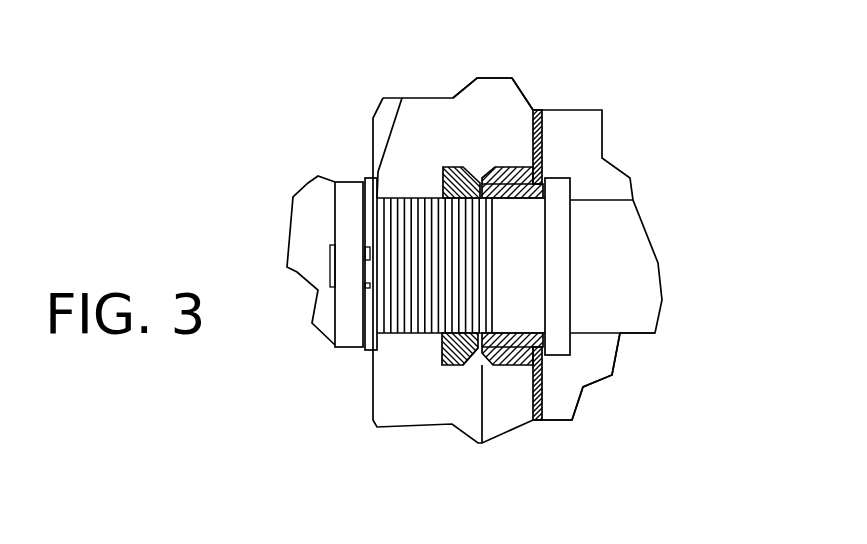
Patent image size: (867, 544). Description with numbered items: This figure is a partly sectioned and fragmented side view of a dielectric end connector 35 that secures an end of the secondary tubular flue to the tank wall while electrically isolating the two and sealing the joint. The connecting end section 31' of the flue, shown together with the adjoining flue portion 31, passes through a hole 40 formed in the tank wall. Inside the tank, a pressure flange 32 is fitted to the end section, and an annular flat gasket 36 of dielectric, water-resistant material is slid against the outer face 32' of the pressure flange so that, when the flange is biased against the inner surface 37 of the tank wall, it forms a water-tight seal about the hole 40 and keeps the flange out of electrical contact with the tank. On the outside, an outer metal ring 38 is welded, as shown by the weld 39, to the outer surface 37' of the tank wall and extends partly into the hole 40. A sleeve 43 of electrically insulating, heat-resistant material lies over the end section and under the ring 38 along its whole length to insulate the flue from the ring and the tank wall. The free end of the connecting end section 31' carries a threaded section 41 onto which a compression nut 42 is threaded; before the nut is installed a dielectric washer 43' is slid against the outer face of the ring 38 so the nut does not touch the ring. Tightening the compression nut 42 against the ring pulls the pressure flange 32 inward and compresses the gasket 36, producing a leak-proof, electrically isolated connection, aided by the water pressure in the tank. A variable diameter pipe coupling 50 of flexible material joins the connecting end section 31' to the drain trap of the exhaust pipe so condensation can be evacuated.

The housing body 31 is at (557, 260).
The connecting end section 31' is at (599, 242).
The pressure flange 32 is at (630, 266).
The outer face of the pressure flange 32' is at (584, 387).
The dielectric end connector 35 is at (468, 138).
The annular flat gasket 36 is at (545, 177).
The inner surface of the tank wall 37 is at (549, 108).
The outer surface of the tank wall 37' is at (536, 419).
The outer metal ring 38 is at (503, 167).
The weld 39 is at (530, 163).
The hole 40 is at (513, 365).
The threaded section 41 is at (397, 334).
The compression nut 42 is at (448, 168).
The sleeve 43 is at (457, 398).
The dielectric washer 43' is at (402, 402).
The variable diameter pipe coupling 50 is at (308, 182).